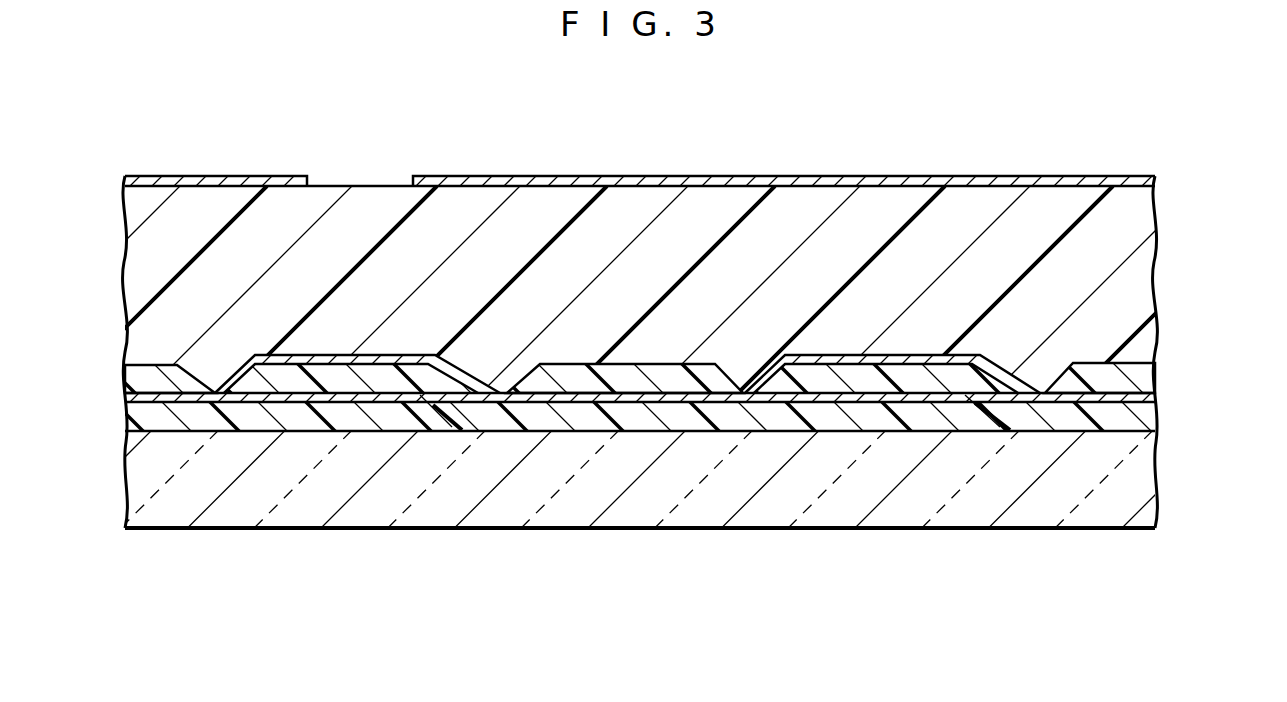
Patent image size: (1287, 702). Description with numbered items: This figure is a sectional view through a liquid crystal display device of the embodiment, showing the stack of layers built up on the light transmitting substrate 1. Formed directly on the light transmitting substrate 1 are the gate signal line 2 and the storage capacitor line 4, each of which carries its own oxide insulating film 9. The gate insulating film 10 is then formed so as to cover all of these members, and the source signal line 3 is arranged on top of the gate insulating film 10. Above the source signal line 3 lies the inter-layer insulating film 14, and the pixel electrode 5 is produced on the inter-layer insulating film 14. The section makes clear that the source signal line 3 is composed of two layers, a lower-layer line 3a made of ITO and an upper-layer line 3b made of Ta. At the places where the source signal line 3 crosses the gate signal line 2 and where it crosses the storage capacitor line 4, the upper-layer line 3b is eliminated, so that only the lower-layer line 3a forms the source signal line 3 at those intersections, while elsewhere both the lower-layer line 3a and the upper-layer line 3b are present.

The light transmitting substrate 1 is at (1099, 512).
The gate signal line 2 is at (353, 425).
The source signal line 3 is at (685, 394).
The lower-layer line 3a is at (1150, 398).
The upper-layer line 3b is at (1150, 372).
The storage capacitor line 4 is at (889, 428).
The pixel electrode 5 is at (1131, 177).
The oxide insulating film 9 is at (455, 425).
The gate insulating film 10 is at (625, 428).
The inter-layer insulating film 14 is at (1142, 266).